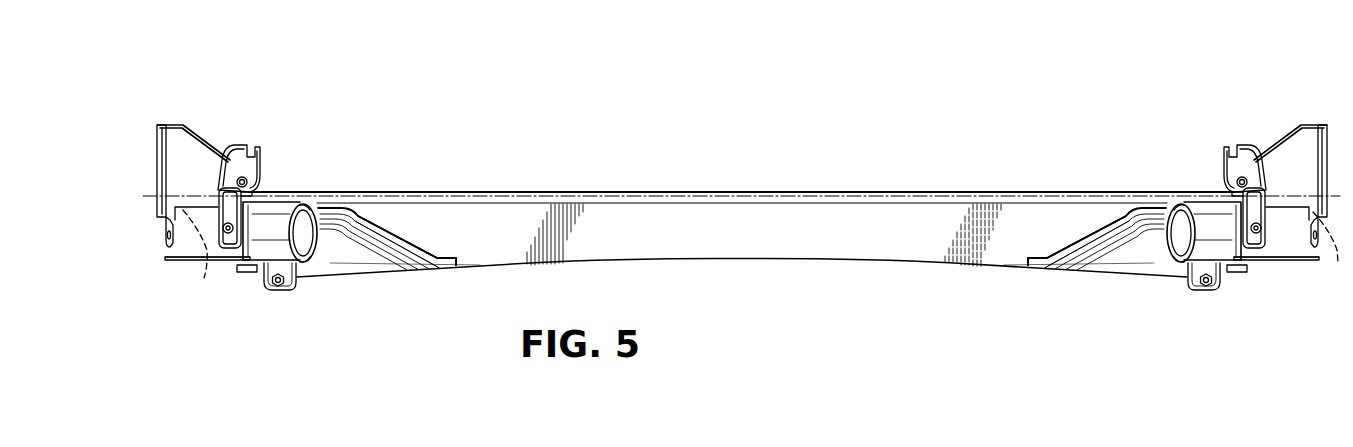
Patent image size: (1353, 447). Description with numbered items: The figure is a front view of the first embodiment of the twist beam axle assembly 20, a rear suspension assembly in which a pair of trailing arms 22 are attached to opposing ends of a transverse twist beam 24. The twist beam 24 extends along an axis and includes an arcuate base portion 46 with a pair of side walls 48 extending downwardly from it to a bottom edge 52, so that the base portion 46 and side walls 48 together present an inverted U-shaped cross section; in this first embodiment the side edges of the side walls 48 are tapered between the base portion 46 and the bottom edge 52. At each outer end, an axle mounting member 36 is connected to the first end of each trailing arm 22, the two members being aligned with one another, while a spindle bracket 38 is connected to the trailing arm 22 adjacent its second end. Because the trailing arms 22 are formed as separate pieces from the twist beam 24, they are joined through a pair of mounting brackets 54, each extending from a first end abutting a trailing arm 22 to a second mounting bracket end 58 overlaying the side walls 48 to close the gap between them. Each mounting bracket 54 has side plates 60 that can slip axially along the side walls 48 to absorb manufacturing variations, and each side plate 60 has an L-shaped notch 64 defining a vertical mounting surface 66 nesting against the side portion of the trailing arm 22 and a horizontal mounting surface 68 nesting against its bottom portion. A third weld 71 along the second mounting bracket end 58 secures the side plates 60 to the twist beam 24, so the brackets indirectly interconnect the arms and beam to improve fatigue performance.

The twist beam axle assembly 20 is at (878, 134).
The trailing arm 22 is at (180, 258).
The twist beam 24 is at (1095, 195).
The axle mounting member 36 is at (260, 273).
The spindle bracket 38 is at (160, 127).
The base portion 46 is at (773, 192).
The side wall 48 is at (905, 245).
The bottom edge 52 is at (787, 262).
The mounting bracket 54 is at (390, 272).
The second mounting bracket end 58 is at (448, 265).
The side plate 60 is at (355, 262).
The notch 64 is at (306, 205).
The vertical mounting surface 66 is at (327, 228).
The horizontal mounting surface 68 is at (307, 263).
The third weld 71 is at (405, 240).